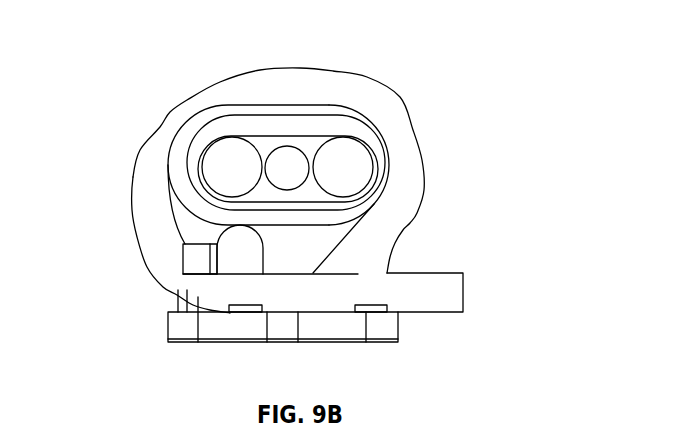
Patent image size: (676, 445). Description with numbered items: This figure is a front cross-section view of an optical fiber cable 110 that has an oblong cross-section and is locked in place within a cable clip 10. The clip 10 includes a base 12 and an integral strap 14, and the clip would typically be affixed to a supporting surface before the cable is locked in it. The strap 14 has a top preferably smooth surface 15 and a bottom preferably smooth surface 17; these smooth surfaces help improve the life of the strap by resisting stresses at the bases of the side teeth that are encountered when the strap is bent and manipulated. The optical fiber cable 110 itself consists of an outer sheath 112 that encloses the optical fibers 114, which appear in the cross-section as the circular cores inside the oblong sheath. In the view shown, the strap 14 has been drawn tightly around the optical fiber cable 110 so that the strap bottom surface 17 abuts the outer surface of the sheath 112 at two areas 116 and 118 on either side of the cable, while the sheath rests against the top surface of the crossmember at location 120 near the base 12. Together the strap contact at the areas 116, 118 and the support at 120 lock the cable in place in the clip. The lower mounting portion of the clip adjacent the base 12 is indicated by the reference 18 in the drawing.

The clip 10 is at (146, 99).
The base 12 is at (255, 328).
The strap 14 is at (162, 137).
The top surface 15 is at (135, 232).
The bottom surface 17 is at (177, 160).
The mounting surface 18 is at (229, 350).
The optical fiber cable 110 is at (185, 196).
The outer sheath 112 is at (267, 123).
The optical fibers 114 is at (228, 150).
The area 116 is at (217, 122).
The area 118 is at (388, 165).
The crossmember contact location 120 is at (237, 228).